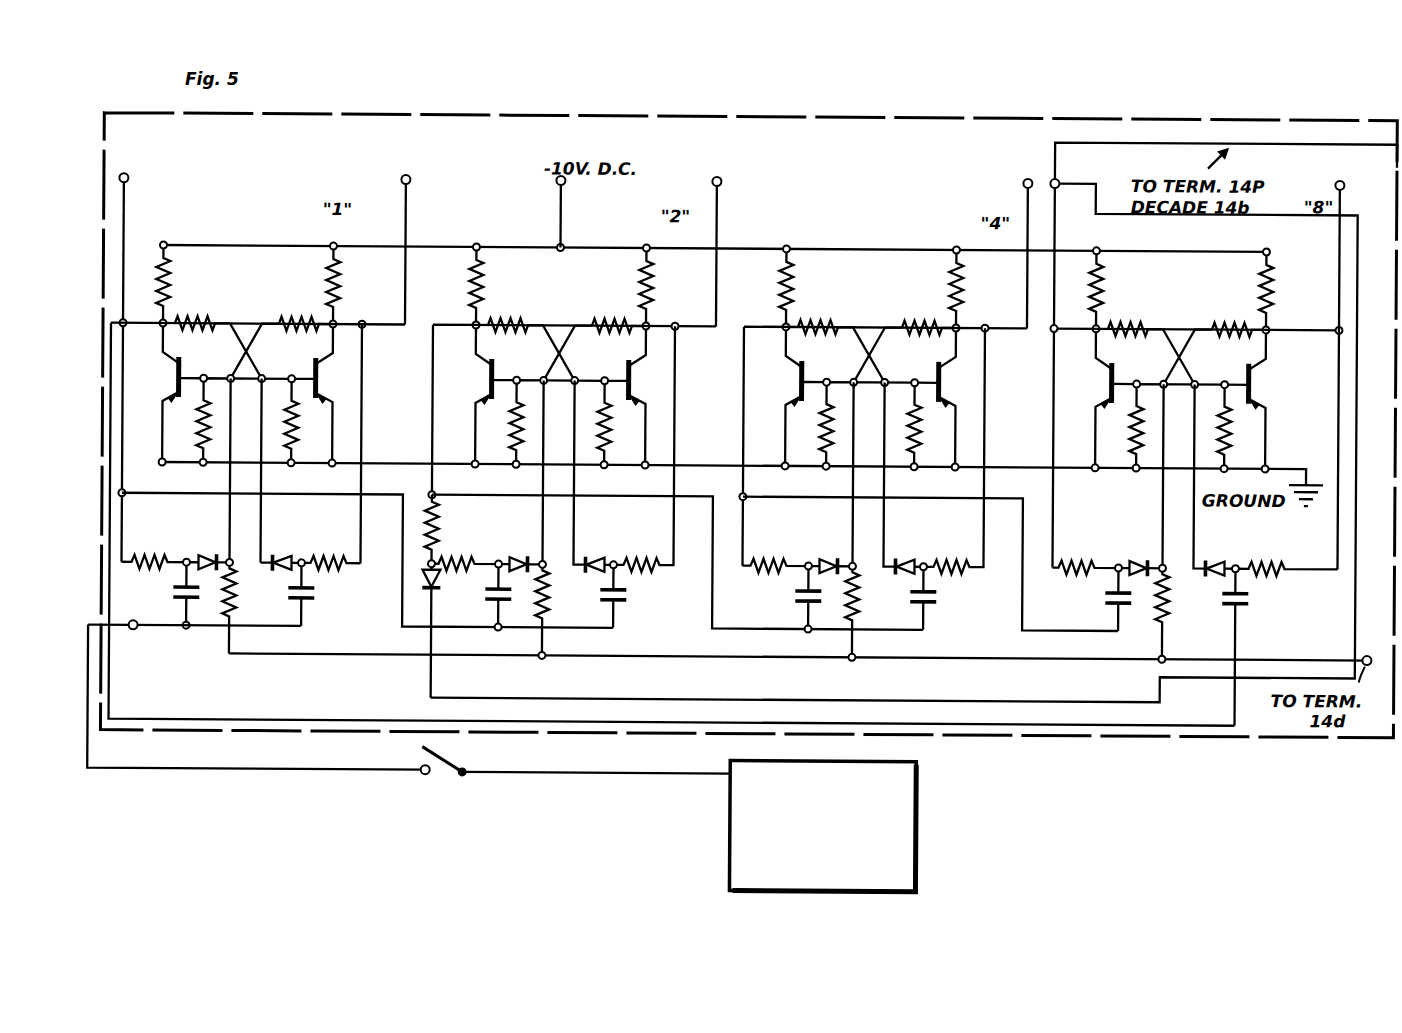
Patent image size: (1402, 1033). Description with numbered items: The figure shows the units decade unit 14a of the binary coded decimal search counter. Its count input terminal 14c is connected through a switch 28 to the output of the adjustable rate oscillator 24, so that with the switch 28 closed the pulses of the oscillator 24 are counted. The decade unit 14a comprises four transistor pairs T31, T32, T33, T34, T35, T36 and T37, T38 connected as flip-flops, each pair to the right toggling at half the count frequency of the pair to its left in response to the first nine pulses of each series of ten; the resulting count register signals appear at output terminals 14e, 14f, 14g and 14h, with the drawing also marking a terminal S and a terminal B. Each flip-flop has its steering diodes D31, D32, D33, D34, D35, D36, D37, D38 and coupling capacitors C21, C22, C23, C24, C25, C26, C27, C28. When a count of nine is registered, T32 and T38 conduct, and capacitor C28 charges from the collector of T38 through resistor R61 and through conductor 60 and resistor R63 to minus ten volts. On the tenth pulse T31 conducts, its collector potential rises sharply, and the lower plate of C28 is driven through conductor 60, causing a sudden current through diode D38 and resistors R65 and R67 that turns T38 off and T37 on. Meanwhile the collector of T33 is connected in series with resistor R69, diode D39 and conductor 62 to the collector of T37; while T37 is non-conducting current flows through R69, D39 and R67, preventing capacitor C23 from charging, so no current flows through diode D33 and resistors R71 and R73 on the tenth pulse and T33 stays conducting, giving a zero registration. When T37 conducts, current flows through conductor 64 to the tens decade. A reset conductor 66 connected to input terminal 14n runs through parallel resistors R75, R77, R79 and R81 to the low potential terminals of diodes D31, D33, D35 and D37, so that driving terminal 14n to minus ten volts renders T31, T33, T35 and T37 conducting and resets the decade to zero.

The decade unit 14a is at (1080, 738).
The count input terminal 14c is at (140, 631).
The output terminal 14e is at (402, 183).
The output terminal 14f is at (712, 184).
The output terminal 14g is at (1021, 185).
The output terminal 14h is at (1343, 184).
The input terminal 14n is at (1370, 653).
The oscillator 24 is at (732, 833).
The switch 28 is at (442, 763).
The conductor 60 is at (278, 719).
The conductor 62 is at (658, 698).
The conductor 64 is at (1146, 143).
The reset conductor 66 is at (974, 660).
The set terminal S is at (134, 158).
The B terminal B is at (1059, 178).
The transistor T31 is at (172, 378).
The transistor T32 is at (322, 380).
The transistor T33 is at (477, 394).
The transistor T34 is at (642, 395).
The transistor T35 is at (788, 396).
The transistor T36 is at (951, 397).
The transistor T37 is at (1098, 398).
The transistor T38 is at (1267, 400).
The resistor R61 is at (1278, 562).
The resistor R63 is at (170, 292).
The resistor R65 is at (1152, 341).
The resistor R67 is at (1130, 290).
The resistor R69 is at (440, 531).
The resistor R71 is at (595, 337).
The resistor R73 is at (620, 287).
The resistor R75 is at (236, 601).
The resistor R77 is at (544, 608).
The resistor R79 is at (854, 609).
The resistor R81 is at (1166, 614).
The diode D31 is at (213, 556).
The diode D32 is at (280, 558).
The diode D33 is at (528, 558).
The diode D34 is at (588, 560).
The diode D35 is at (840, 558).
The diode D36 is at (897, 560).
The diode D37 is at (1145, 560).
The diode D38 is at (1210, 560).
The diode D39 is at (440, 604).
The capacitor C21 is at (175, 590).
The capacitor C22 is at (318, 593).
The capacitor C23 is at (493, 597).
The capacitor C24 is at (628, 597).
The capacitor C25 is at (790, 597).
The capacitor C26 is at (938, 596).
The capacitor C27 is at (1107, 596).
The capacitor C28 is at (1251, 598).